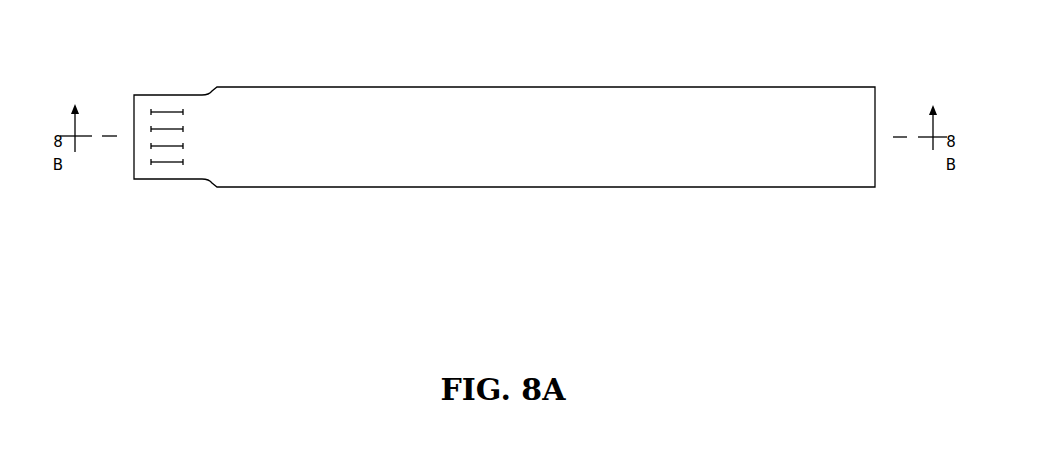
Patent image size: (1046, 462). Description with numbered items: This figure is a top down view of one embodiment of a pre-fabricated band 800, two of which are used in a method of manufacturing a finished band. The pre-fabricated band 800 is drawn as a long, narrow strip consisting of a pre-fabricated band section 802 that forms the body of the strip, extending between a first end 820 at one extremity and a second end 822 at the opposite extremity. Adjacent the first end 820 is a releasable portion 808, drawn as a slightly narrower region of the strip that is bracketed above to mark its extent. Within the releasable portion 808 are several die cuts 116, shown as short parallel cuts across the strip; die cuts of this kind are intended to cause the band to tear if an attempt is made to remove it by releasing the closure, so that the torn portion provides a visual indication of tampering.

The pre-fabricated band 800 is at (503, 170).
The pre-fabricated band section 802 is at (672, 120).
The releasable portion 808 is at (220, 70).
The die cuts 116 is at (167, 163).
The first end 820 is at (131, 191).
The second end 822 is at (877, 192).